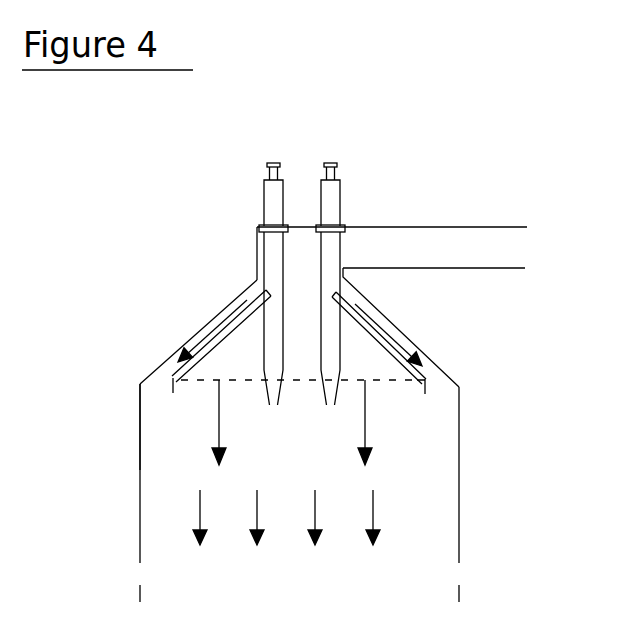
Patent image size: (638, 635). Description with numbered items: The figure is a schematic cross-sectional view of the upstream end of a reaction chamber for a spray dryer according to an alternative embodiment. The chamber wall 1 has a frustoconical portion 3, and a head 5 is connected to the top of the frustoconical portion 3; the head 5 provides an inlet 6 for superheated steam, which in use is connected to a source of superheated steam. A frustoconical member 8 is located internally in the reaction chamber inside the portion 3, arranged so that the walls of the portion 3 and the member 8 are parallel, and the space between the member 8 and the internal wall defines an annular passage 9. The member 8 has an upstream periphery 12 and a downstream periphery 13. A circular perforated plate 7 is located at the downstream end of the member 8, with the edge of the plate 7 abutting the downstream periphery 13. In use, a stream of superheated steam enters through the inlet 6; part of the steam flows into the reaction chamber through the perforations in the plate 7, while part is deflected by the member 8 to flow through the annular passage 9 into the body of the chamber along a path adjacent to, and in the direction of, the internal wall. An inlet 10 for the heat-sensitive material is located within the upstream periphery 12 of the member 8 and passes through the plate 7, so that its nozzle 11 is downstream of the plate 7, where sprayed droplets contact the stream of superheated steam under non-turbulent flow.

The chamber wall 1 is at (460, 552).
The frustoconical portion 3 is at (403, 333).
The head 5 is at (256, 260).
The inlet 6 is at (516, 251).
The circular perforated plate 7 is at (193, 382).
The frustoconical member 8 is at (217, 335).
The annular passage 9 is at (353, 297).
The inlet 10 is at (301, 167).
The nozzle 11 is at (298, 400).
The upstream periphery 12 is at (258, 296).
The downstream periphery 13 is at (178, 366).